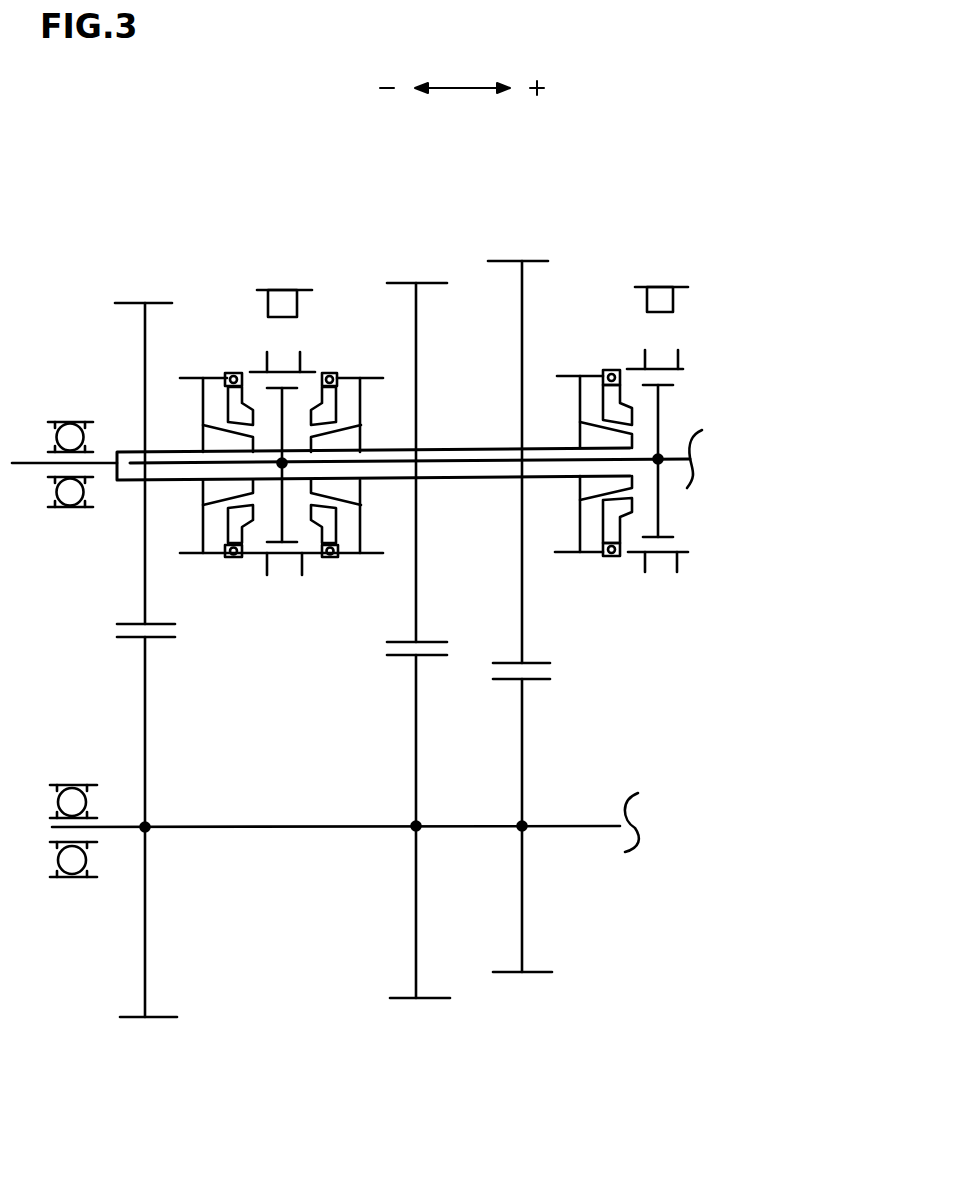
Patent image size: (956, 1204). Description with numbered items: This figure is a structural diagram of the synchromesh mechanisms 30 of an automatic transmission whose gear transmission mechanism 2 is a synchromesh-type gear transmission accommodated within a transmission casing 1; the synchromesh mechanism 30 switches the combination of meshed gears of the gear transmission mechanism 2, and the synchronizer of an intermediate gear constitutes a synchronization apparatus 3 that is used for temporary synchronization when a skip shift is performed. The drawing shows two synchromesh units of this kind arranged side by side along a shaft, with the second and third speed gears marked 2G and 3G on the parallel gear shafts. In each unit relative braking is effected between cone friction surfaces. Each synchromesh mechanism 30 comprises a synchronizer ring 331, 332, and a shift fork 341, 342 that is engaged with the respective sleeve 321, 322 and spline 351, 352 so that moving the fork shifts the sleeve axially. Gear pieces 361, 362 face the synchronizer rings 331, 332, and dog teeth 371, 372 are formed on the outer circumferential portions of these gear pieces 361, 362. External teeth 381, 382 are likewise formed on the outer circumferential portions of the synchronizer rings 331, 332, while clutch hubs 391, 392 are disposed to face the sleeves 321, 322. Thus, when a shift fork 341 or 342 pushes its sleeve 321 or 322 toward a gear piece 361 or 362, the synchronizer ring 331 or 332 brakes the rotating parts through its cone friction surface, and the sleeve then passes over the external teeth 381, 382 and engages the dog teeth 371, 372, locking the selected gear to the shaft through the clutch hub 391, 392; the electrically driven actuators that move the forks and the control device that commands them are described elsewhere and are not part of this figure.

The transmission casing 1 is at (676, 458).
The gear transmission mechanism 2 is at (712, 690).
The synchronization apparatus 3 is at (635, 98).
The second speed gear 2G is at (533, 260).
The third speed gear 3G is at (412, 282).
The synchromesh mechanism 30 is at (366, 328).
The sleeve 321 is at (683, 362).
The sleeve 322 is at (265, 362).
The synchronizer ring 331 is at (602, 553).
The synchronizer ring 332 is at (338, 527).
The shift fork 341 is at (661, 287).
The shift fork 342 is at (283, 290).
The spline 351 is at (683, 368).
The spline 352 is at (320, 372).
The gear piece 361 is at (600, 506).
The gear piece 362 is at (360, 415).
The dog teeth 371 is at (567, 375).
The dog teeth 372 is at (372, 555).
The external teeth 381 is at (610, 553).
The external teeth 382 is at (330, 555).
The clutch hub 391 is at (658, 508).
The clutch hub 392 is at (278, 518).